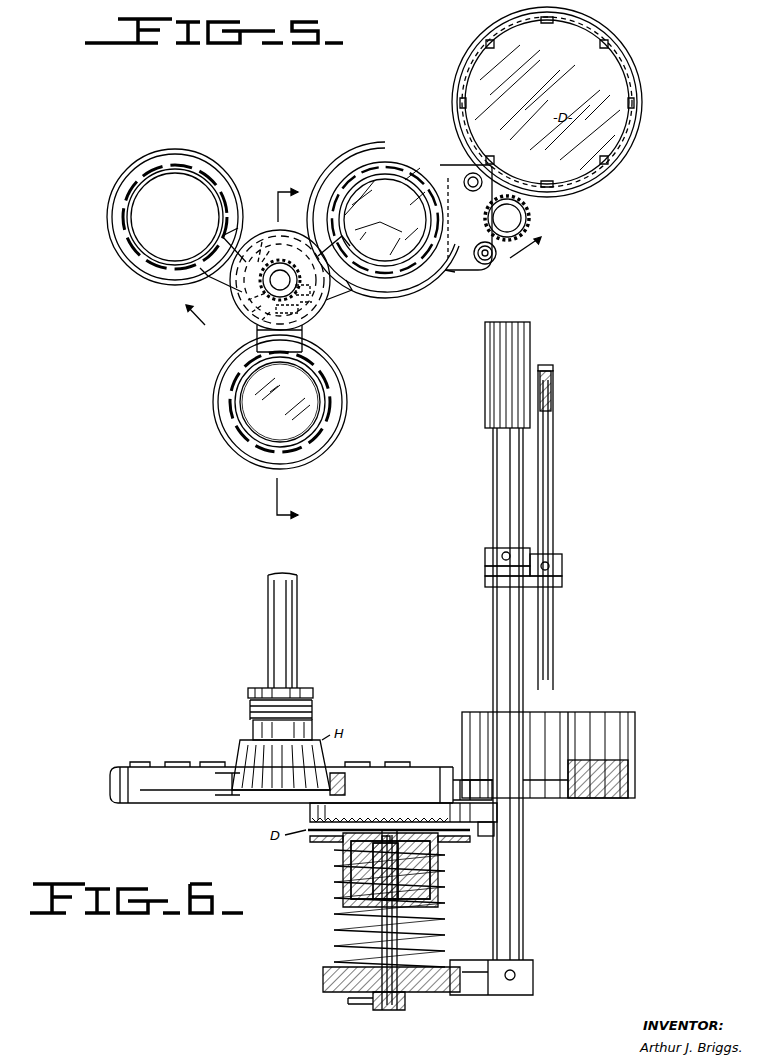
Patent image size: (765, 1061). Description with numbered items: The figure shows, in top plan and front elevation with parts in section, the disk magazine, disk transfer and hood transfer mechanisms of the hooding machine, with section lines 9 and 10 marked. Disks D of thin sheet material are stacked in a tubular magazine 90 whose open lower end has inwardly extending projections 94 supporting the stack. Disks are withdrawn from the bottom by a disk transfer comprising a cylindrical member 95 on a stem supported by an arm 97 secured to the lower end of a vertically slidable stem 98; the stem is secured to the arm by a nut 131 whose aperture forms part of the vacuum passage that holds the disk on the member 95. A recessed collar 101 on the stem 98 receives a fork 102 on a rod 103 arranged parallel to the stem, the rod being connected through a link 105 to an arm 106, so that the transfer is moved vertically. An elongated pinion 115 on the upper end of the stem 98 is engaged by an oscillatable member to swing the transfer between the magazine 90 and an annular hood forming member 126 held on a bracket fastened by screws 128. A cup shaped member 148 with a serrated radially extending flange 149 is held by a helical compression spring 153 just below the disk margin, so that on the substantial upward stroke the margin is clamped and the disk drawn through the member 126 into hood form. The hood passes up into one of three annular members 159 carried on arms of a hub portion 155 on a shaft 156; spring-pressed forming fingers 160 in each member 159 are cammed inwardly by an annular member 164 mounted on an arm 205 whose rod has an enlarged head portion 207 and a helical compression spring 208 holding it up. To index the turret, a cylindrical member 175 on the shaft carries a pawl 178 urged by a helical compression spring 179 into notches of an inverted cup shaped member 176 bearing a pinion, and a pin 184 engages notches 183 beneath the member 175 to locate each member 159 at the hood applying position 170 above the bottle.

In FIG. 5, the section line 9 is at (368, 276).
In FIG. 5, the section line 10 is at (299, 346).
In FIG. 5, the tubular magazine 90 is at (640, 115).
In FIG. 6, the tubular magazine 90 is at (636, 744).
In FIG. 5, the inwardly extending projections 94 is at (600, 58).
In FIG. 6, the cylindrical member 95 is at (430, 872).
In FIG. 6, the arm 97 is at (484, 996).
In FIG. 6, the stem 98 is at (524, 897).
In FIG. 6, the recessed collar 101 is at (485, 556).
In FIG. 6, the fork 102 is at (562, 570).
In FIG. 6, the rod 103 is at (553, 504).
In FIG. 6, the link 105 is at (552, 392).
In FIG. 6, the arm 106 is at (552, 364).
In FIG. 5, the elongated pinion 115 is at (529, 212).
In FIG. 6, the elongated pinion 115 is at (530, 346).
In FIG. 5, the annular hood forming member 126 is at (466, 268).
In FIG. 6, the annular hood forming member 126 is at (310, 814).
In FIG. 5, the screws 128 is at (497, 259).
In FIG. 6, the screws 128 is at (484, 836).
In FIG. 6, the nut 131 is at (398, 1010).
In FIG. 6, the cup shaped member 148 is at (343, 866).
In FIG. 6, the radially extending flange 149 is at (318, 840).
In FIG. 6, the helical compression spring 153 is at (334, 930).
In FIG. 6, the hub portion 155 is at (312, 726).
In FIG. 5, the shaft 156 is at (272, 282).
In FIG. 6, the shaft 156 is at (297, 640).
In FIG. 5, the annular member 159 is at (126, 268).
In FIG. 6, the annular member 159 is at (112, 790).
In FIG. 5, the forming fingers 160 is at (326, 405).
In FIG. 6, the forming fingers 160 is at (152, 765).
In FIG. 5, the annular member 164 is at (336, 397).
In FIG. 5, the hood applying position 170 is at (338, 455).
In FIG. 5, the cylindrical member 175 is at (252, 312).
In FIG. 5, the inverted cylindrical cup shaped member 176 is at (262, 320).
In FIG. 5, the pawl 178 is at (304, 314).
In FIG. 5, the helical compression spring 179 is at (310, 300).
In FIG. 5, the notches 183 is at (264, 240).
In FIG. 5, the pin 184 is at (250, 300).
In FIG. 5, the arm 205 is at (312, 345).
In FIG. 6, the enlarged head portion 207 is at (310, 690).
In FIG. 6, the helical compression spring 208 is at (312, 704).